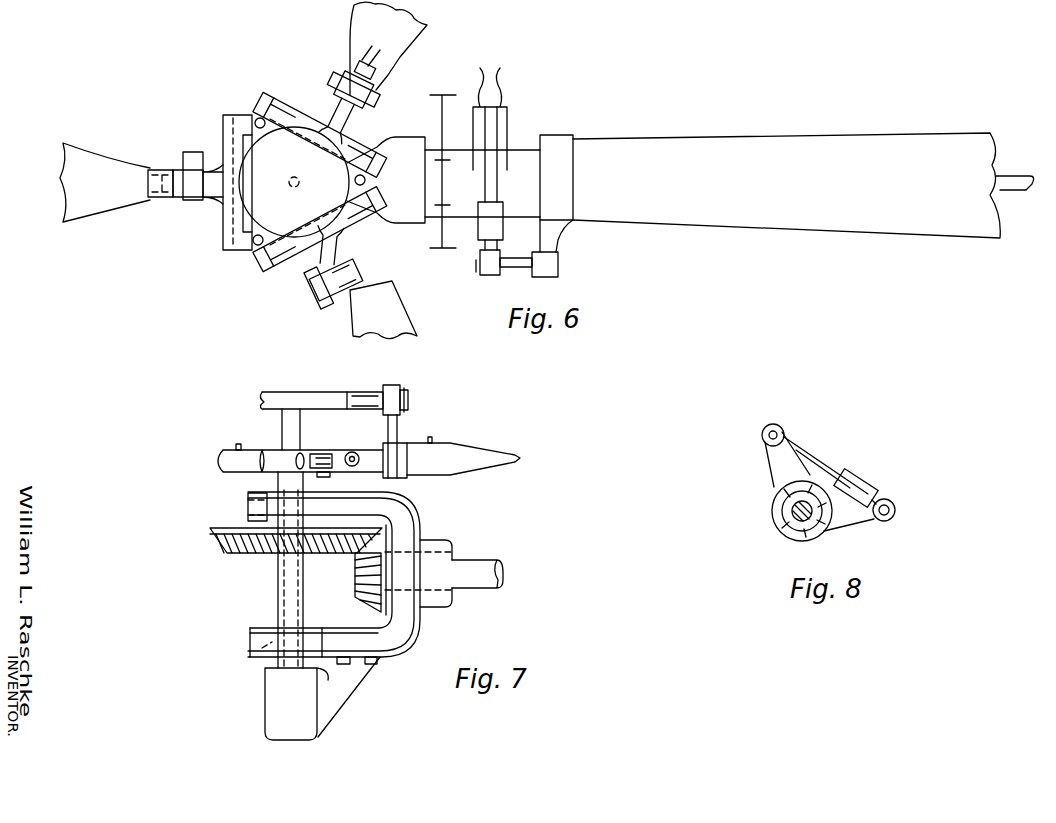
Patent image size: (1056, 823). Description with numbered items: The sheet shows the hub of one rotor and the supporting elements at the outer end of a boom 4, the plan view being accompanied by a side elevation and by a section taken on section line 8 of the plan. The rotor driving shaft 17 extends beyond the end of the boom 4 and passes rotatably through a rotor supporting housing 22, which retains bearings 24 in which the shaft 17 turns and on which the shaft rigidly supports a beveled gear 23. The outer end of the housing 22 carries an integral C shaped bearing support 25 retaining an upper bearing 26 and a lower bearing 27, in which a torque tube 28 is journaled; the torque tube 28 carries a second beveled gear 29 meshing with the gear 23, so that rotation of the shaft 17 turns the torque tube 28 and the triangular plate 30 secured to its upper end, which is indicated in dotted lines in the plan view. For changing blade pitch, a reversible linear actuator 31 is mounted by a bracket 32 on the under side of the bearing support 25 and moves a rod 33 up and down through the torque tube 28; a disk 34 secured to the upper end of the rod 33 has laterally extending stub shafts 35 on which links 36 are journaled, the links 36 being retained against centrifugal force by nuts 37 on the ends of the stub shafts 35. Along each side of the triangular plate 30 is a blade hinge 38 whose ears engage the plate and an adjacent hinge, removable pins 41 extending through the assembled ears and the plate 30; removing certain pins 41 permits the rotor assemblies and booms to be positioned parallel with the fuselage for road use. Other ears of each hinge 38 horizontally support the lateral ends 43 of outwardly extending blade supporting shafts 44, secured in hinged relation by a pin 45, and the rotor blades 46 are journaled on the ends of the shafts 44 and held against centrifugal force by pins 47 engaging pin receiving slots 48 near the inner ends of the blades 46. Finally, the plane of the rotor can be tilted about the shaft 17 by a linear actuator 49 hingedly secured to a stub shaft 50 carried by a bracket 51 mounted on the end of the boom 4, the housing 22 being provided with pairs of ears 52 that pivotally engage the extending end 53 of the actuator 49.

In FIG. 6, the boom 4 is at (700, 148).
In FIG. 6, the section line 8- 8 is at (433, 176).
In FIG. 6, the shaft 17 is at (1022, 190).
In FIG. 7, the shaft 17 is at (485, 562).
In FIG. 8, the shaft 17 is at (852, 529).
In FIG. 7, the rotor supporting housing 22 is at (430, 542).
In FIG. 8, the rotor supporting housing 22 is at (792, 512).
In FIG. 7, the beveled gear 23 is at (352, 596).
In FIG. 7, the bearing 24 is at (458, 548).
In FIG. 8, the bearing 24 is at (790, 526).
In FIG. 6, the C shaped bearing support 25 is at (404, 226).
In FIG. 7, the C shaped bearing support 25 is at (248, 515).
In FIG. 7, the upper bearing 26 is at (248, 510).
In FIG. 7, the lower bearing 27 is at (256, 652).
In FIG. 7, the torque tube 28 is at (277, 600).
In FIG. 7, the beveled gear 29 is at (215, 545).
In FIG. 6, the triangular plate 30 is at (223, 143).
In FIG. 7, the linear actuator 31 is at (283, 716).
In FIG. 7, the bracket 32 is at (340, 694).
In FIG. 7, the rod 33 is at (290, 436).
In FIG. 6, the disk 34 is at (248, 200).
In FIG. 7, the disk 34 is at (322, 392).
In FIG. 7, the stub shaft 35 is at (366, 392).
In FIG. 7, the link 36 is at (398, 432).
In FIG. 7, the nut 37 is at (405, 386).
In FIG. 6, the blade hinge 38 is at (248, 98).
In FIG. 6, the removable pin 41 is at (248, 114).
In FIG. 7, the removable pin 41 is at (318, 452).
In FIG. 6, the lateral end 43 is at (297, 104).
In FIG. 7, the blade supporting shaft 44 is at (228, 458).
In FIG. 7, the pin 45 is at (350, 452).
In FIG. 6, the rotor blade 46 is at (95, 162).
In FIG. 7, the rotor blade 46 is at (505, 456).
In FIG. 6, the pin 47 is at (355, 48).
In FIG. 6, the pin receiving slot 48 is at (398, 62).
In FIG. 6, the linear actuator 49 is at (500, 222).
In FIG. 8, the linear actuator 49 is at (850, 478).
In FIG. 6, the stub shaft 50 is at (515, 270).
In FIG. 8, the stub shaft 50 is at (895, 508).
In FIG. 6, the bracket 51 is at (560, 196).
In FIG. 8, the bracket 51 is at (772, 504).
In FIG. 6, the ears 52 is at (492, 110).
In FIG. 8, the ears 52 is at (762, 446).
In FIG. 6, the extending end 53 is at (494, 150).
In FIG. 8, the extending end 53 is at (812, 456).